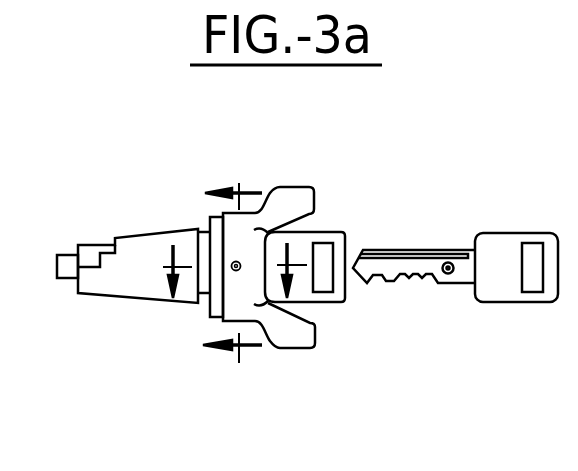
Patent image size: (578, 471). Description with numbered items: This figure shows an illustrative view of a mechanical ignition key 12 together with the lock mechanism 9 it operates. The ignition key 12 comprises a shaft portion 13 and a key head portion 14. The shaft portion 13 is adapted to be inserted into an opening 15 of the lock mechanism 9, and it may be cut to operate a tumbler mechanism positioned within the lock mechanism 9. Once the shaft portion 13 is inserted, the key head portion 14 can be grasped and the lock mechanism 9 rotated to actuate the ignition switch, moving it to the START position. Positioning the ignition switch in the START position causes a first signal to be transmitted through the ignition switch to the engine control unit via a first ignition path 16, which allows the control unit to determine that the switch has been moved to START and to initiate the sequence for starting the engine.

The lock mechanism 9 is at (216, 228).
The opening 15 is at (265, 236).
The ignition key 12 is at (456, 304).
The shaft portion 13 is at (388, 272).
The key head portion 14 is at (495, 243).
The first ignition path 16 is at (445, 274).